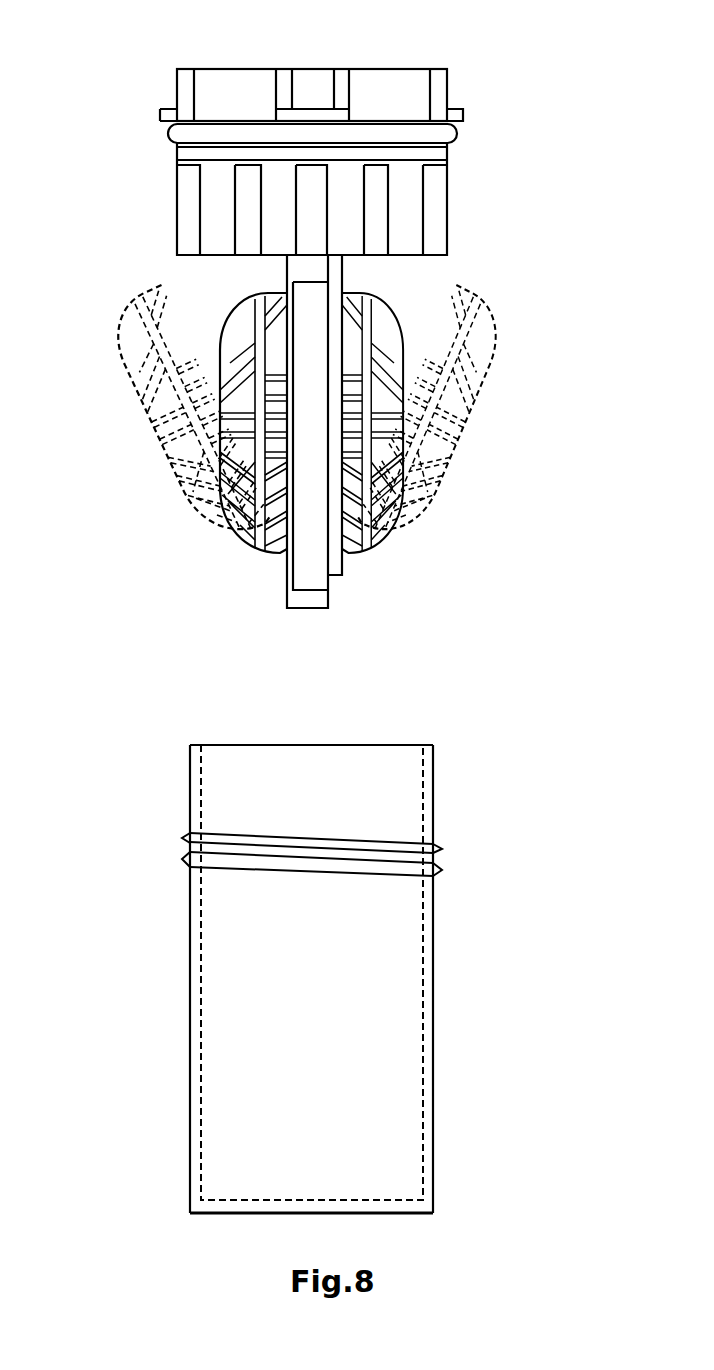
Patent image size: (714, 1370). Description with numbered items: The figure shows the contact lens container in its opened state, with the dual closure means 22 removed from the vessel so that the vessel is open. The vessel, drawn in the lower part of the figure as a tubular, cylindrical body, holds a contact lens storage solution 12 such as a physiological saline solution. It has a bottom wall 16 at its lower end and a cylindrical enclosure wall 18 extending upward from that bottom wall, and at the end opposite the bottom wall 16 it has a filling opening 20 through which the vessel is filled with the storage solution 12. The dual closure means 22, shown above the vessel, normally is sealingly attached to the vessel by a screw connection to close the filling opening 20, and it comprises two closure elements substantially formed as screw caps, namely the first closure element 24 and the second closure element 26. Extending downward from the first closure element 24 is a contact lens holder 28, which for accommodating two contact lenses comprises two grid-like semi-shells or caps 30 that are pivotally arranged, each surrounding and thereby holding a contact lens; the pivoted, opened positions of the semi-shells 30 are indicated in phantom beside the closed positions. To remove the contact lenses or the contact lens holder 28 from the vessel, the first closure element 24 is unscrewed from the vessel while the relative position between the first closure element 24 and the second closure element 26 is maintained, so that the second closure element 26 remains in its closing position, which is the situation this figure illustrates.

The contact lens storage solution 12 is at (255, 1003).
The bottom wall 16 is at (253, 1213).
The cylindrical enclosure wall 18 is at (428, 980).
The filling opening 20 is at (363, 745).
The dual closure means 22 is at (560, 137).
The first closure element 24 is at (136, 208).
The second closure element 26 is at (113, 101).
The contact lens holder 28 is at (435, 304).
The grid-like semi-shells 30 is at (253, 356).